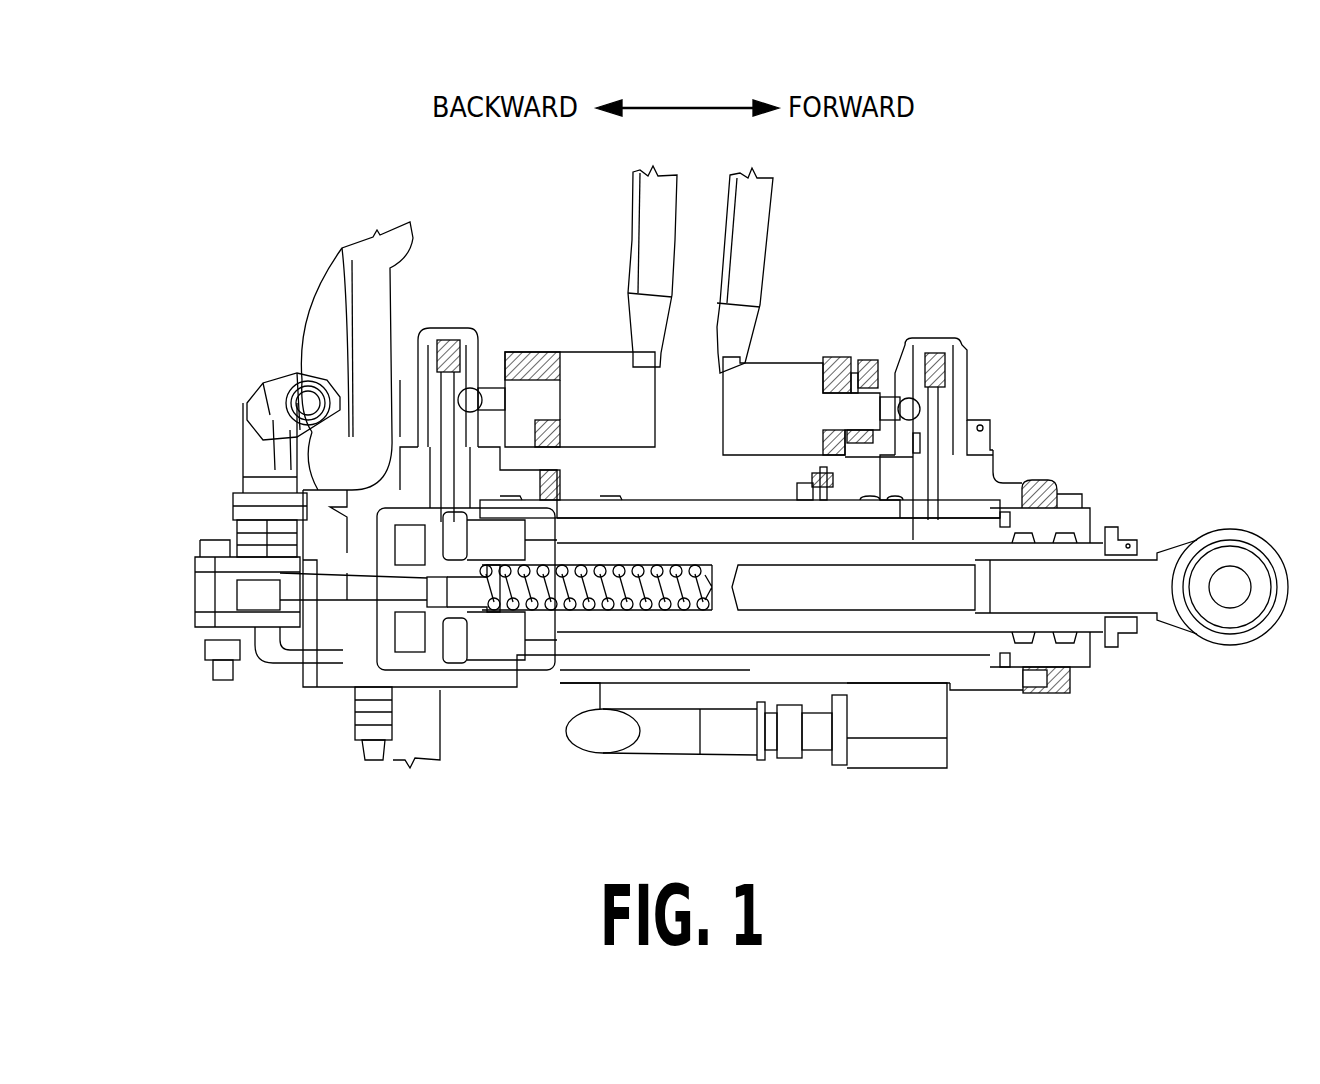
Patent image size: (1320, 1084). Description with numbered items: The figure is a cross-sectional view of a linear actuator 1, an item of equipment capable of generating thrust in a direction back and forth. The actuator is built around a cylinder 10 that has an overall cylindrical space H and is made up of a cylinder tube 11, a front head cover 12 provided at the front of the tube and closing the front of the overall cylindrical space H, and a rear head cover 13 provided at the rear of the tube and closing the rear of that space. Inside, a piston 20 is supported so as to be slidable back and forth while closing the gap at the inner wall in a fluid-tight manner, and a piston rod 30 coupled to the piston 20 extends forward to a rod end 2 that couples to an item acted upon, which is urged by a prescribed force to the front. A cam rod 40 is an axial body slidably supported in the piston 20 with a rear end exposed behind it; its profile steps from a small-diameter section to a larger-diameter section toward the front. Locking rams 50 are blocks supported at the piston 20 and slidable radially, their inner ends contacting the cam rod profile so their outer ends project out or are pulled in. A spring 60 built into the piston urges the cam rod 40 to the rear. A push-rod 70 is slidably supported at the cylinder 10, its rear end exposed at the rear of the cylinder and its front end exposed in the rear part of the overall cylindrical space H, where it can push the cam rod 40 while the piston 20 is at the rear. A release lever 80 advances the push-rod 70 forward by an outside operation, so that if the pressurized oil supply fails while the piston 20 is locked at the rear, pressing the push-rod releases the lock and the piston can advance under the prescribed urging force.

The linear actuator 1 is at (1057, 192).
The rod end 2 is at (1217, 527).
The cylinder 10 is at (1008, 463).
The cylinder tube 11 is at (661, 497).
The front head cover 12 is at (977, 473).
The rear head cover 13 is at (400, 462).
The piston 20 is at (480, 644).
The piston rod 30 is at (771, 622).
The cam rod 40 is at (442, 604).
The locking ram 50 is at (456, 528).
The spring 60 is at (626, 600).
The push-rod 70 is at (343, 590).
The release lever 80 is at (207, 548).
The overall cylindrical space H is at (738, 525).